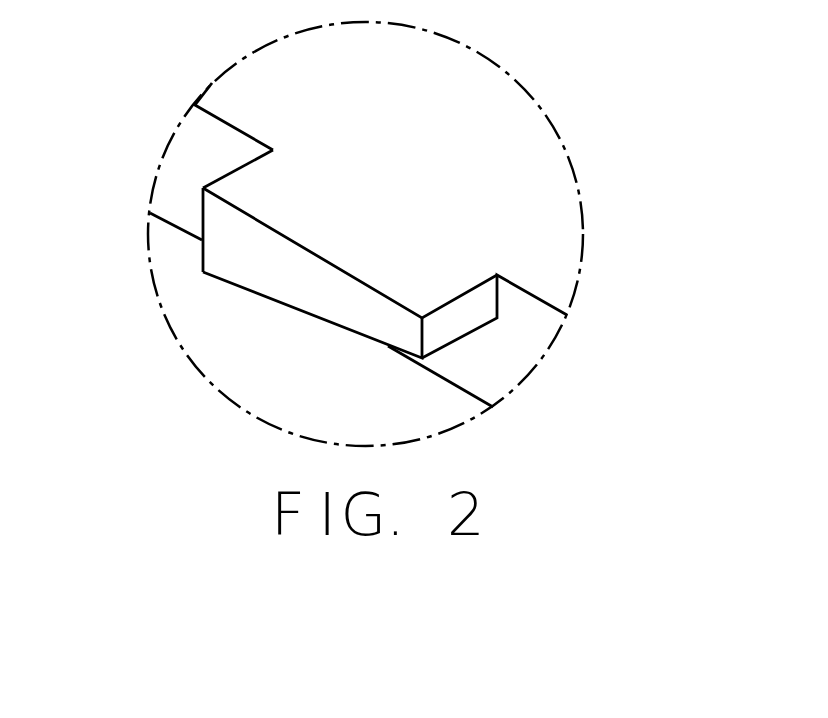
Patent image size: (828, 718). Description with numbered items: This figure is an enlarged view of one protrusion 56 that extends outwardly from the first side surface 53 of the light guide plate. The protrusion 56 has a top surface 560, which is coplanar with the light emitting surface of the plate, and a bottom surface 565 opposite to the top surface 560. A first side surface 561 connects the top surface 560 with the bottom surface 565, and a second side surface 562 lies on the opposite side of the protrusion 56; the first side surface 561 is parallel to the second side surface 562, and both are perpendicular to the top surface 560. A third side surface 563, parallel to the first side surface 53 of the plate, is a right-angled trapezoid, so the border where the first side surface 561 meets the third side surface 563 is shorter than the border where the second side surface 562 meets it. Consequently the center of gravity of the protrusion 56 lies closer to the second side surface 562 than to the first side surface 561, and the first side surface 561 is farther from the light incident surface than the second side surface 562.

The first side surface 53 is at (197, 130).
The protrusion 56 is at (282, 330).
The top surface 560 is at (355, 230).
The first side surface 561 is at (455, 317).
The second side surface 562 is at (221, 179).
The third side surface 563 is at (223, 250).
The bottom surface 565 is at (255, 292).